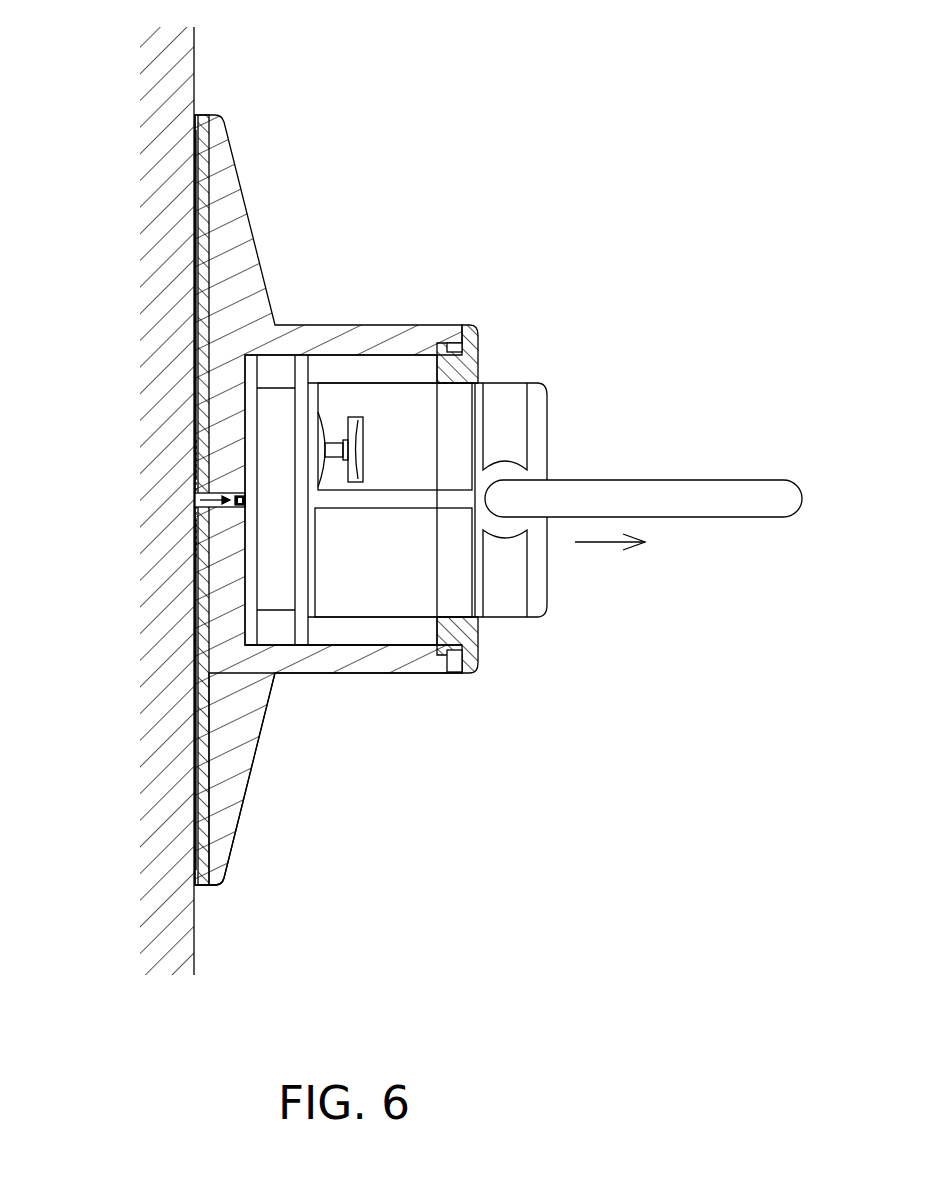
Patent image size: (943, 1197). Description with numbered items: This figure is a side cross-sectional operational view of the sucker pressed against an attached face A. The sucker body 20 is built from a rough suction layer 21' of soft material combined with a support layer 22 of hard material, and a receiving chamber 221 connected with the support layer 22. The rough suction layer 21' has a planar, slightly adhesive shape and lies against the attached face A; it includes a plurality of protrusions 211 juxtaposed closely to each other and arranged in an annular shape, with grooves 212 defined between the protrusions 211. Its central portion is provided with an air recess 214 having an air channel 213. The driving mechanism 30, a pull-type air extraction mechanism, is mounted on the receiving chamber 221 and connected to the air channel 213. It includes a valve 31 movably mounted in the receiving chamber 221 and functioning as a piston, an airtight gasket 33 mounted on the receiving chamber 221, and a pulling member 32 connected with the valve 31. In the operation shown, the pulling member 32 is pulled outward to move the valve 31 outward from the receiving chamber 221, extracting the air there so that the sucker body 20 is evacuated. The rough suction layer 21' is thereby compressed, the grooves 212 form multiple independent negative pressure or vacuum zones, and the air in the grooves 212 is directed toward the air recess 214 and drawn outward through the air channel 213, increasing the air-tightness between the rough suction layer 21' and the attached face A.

The attached face A is at (182, 110).
The sucker body 20 is at (263, 226).
The support layer 22 is at (230, 763).
The receiving chamber 221 is at (382, 632).
The rough suction layer 21' is at (241, 910).
The protrusions 211 is at (193, 207).
The grooves 212 is at (193, 287).
The air recess 214 is at (192, 470).
The air channel 213 is at (218, 507).
The valve 31 is at (382, 383).
The driving mechanism 30 is at (575, 375).
The pulling member 32 is at (657, 497).
The airtight gasket 33 is at (463, 635).